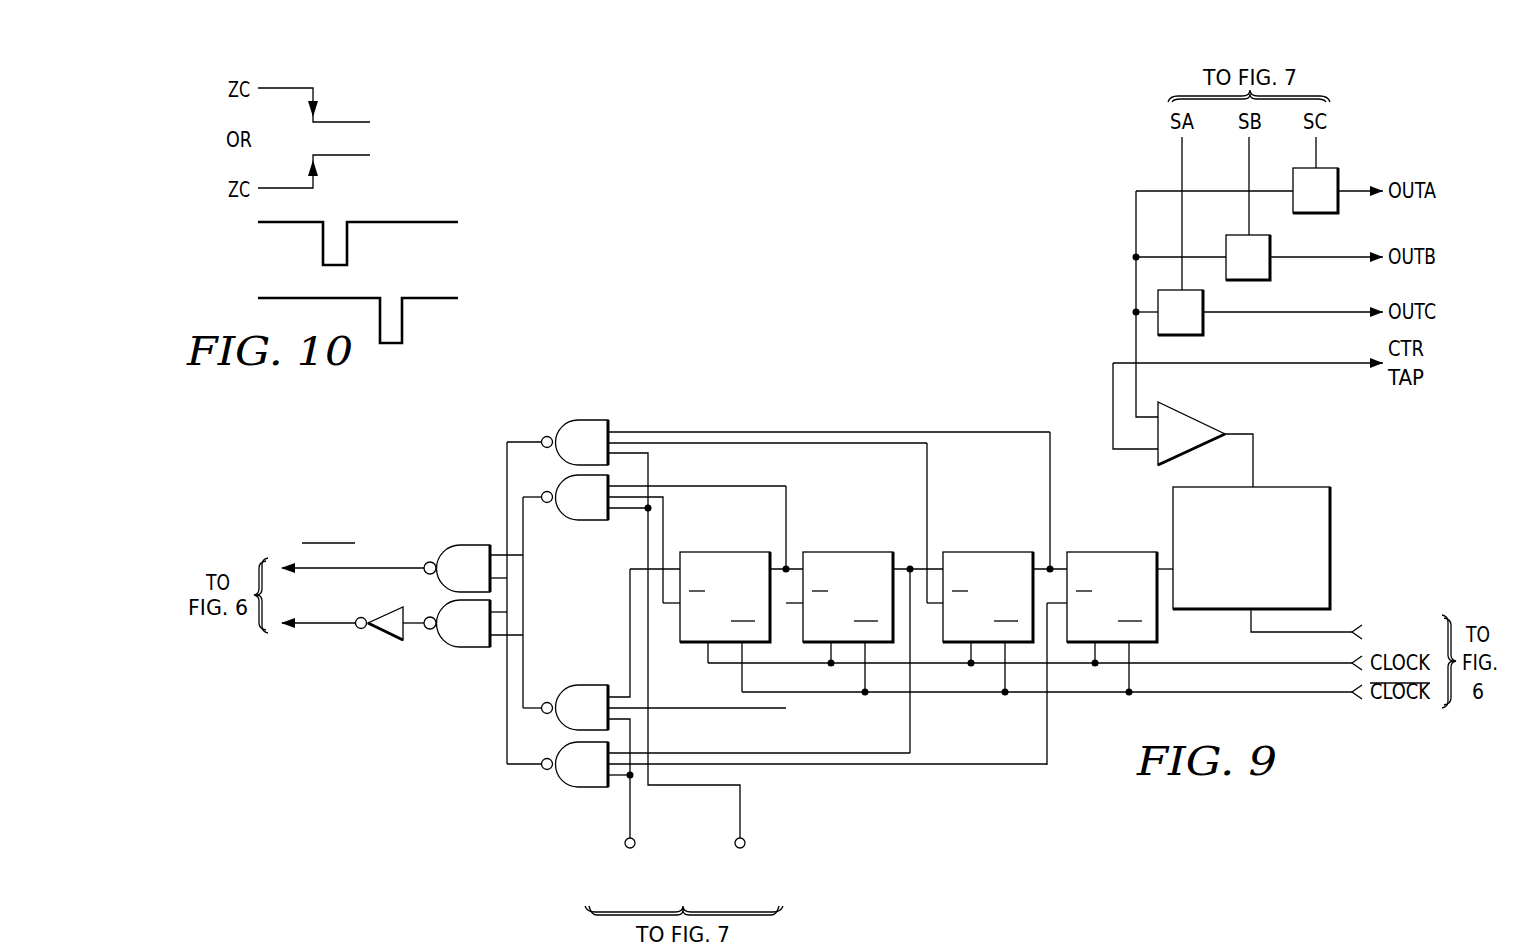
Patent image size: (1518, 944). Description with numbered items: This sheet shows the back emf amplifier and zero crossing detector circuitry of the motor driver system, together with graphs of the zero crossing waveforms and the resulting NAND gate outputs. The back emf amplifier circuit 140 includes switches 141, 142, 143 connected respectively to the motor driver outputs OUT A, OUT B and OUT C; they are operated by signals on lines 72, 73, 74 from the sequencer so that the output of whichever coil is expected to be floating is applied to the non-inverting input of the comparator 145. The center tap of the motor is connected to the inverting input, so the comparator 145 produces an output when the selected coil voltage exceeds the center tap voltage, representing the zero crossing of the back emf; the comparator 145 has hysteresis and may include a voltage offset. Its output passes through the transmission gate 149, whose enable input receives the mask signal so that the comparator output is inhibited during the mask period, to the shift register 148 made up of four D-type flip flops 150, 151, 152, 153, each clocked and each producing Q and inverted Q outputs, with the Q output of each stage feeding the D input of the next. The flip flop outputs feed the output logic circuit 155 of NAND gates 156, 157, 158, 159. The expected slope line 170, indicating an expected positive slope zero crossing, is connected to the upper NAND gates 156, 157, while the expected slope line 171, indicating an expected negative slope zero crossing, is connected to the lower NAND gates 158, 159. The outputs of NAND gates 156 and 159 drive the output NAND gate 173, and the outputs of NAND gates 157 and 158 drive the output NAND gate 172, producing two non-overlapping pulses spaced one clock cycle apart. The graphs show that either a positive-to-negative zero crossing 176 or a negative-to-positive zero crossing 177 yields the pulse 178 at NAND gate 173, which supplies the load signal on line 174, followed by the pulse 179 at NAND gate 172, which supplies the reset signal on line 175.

In FIG. 9, the line 72 is at (1180, 172).
In FIG. 9, the line 73 is at (1248, 172).
In FIG. 9, the line 74 is at (1317, 160).
In FIG. 9, the back emf amplifier circuit 140 is at (1236, 272).
In FIG. 9, the switch 141 is at (1340, 208).
In FIG. 9, the switch 142 is at (1272, 275).
In FIG. 9, the switch 143 is at (1206, 330).
In FIG. 9, the comparator 145 is at (1195, 416).
In FIG. 9, the shift register 148 is at (901, 598).
In FIG. 9, the transmission gate 149 is at (1295, 487).
In FIG. 9, the D-type flip flop 150 is at (1128, 553).
In FIG. 9, the D-type flip flop 151 is at (990, 552).
In FIG. 9, the D-type flip flop 152 is at (845, 552).
In FIG. 9, the D-type flip flop 153 is at (722, 552).
In FIG. 9, the output logic circuit 155 is at (778, 578).
In FIG. 9, the upper NAND gate 156 is at (580, 420).
In FIG. 9, the upper NAND gate 157 is at (580, 521).
In FIG. 9, the lower NAND gate 158 is at (578, 685).
In FIG. 9, the lower NAND gate 159 is at (578, 789).
In FIG. 9, the expected slope line 170 is at (633, 802).
In FIG. 9, the expected slope line 171 is at (743, 802).
In FIG. 10, the output NAND gate 172 is at (306, 320).
In FIG. 9, the output NAND gate 172 is at (402, 541).
In FIG. 10, the output NAND gate 173 is at (306, 216).
In FIG. 9, the output NAND gate 173 is at (402, 649).
In FIG. 9, the line 174 is at (325, 629).
In FIG. 9, the line 175 is at (402, 563).
In FIG. 10, the positive-to-negative zero crossing 176 is at (348, 122).
In FIG. 10, the negative-to-positive zero crossing 177 is at (348, 156).
In FIG. 10, the curve 178 is at (425, 221).
In FIG. 10, the curve 179 is at (425, 300).